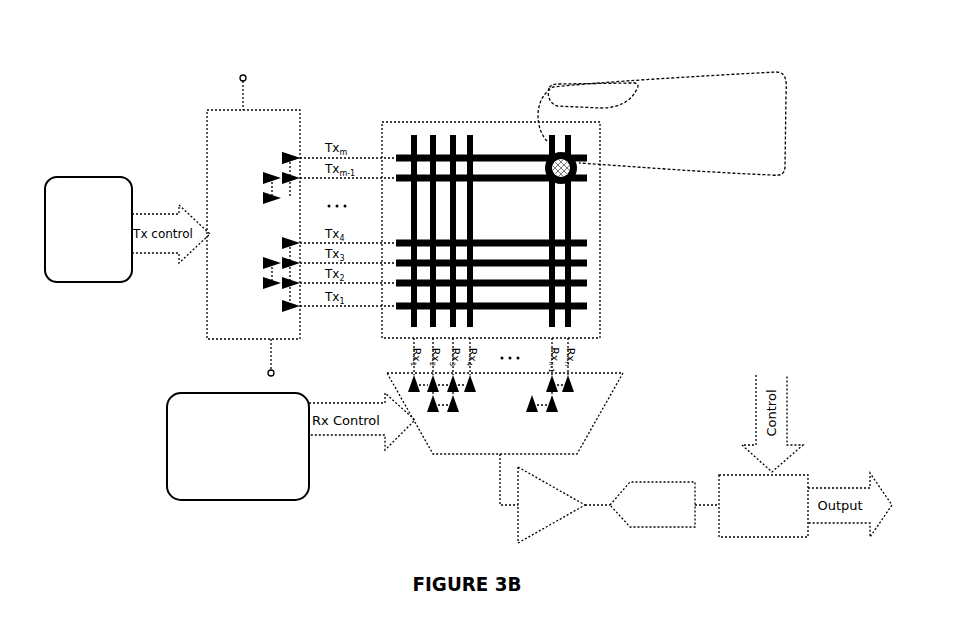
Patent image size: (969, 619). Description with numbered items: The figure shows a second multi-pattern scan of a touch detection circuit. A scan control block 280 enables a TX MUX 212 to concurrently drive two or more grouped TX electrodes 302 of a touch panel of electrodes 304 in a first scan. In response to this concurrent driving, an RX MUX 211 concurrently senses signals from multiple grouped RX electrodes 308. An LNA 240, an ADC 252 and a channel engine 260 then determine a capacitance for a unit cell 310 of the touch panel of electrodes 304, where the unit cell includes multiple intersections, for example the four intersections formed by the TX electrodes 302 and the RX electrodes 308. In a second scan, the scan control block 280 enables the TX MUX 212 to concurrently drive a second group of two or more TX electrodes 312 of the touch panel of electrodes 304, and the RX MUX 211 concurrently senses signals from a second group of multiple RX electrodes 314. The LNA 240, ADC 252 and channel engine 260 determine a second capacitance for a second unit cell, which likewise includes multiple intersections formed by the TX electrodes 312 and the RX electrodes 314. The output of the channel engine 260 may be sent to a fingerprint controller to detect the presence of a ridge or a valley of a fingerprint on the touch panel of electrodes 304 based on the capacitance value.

The scan control block 280 is at (177, 338).
The TX MUX 212 is at (255, 229).
The second group of TX electrodes 312 is at (279, 232).
The grouped TX electrodes 302 is at (299, 148).
The touch panel of electrodes 304 is at (452, 121).
The unit cell 310 is at (580, 186).
The grouped RX electrodes 308 is at (579, 378).
The second group of RX electrodes 314 is at (567, 401).
The RX MUX 211 is at (505, 413).
The LNA 240 is at (551, 505).
The ADC 252 is at (652, 504).
The channel engine 260 is at (763, 506).